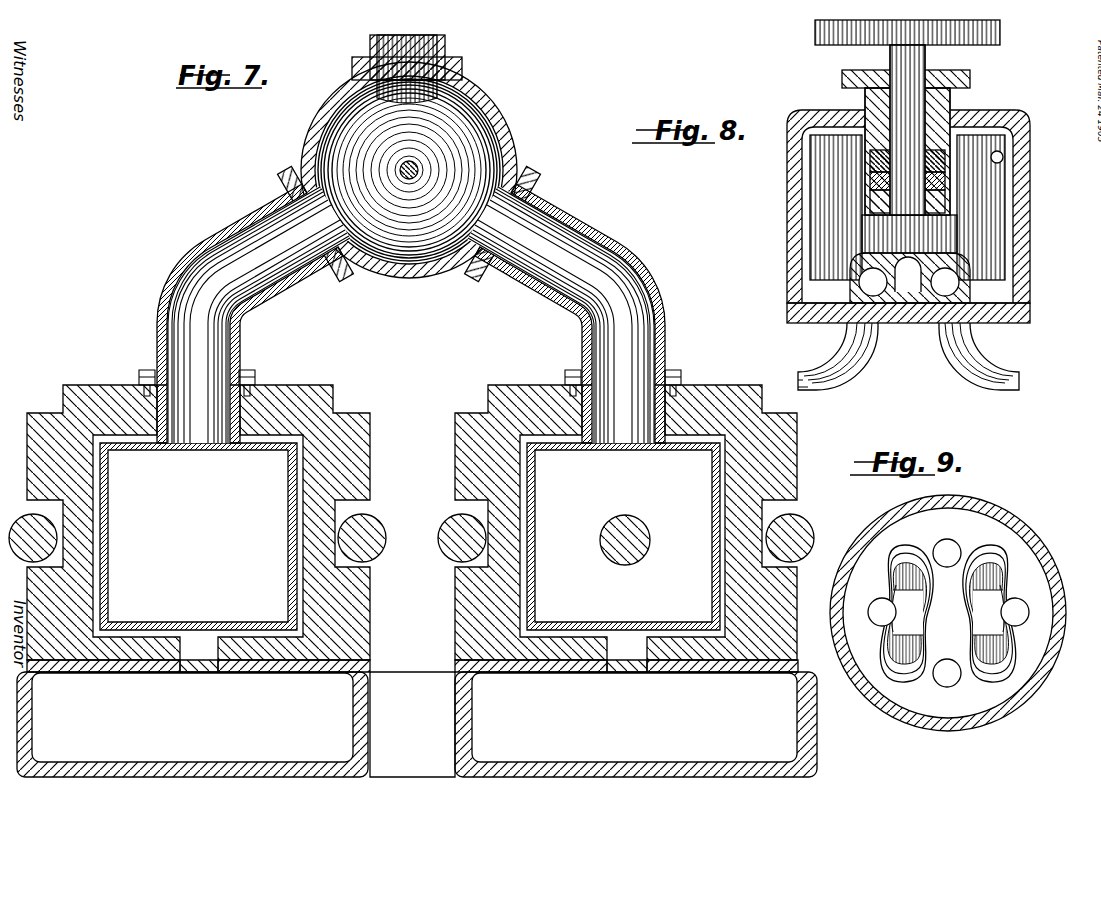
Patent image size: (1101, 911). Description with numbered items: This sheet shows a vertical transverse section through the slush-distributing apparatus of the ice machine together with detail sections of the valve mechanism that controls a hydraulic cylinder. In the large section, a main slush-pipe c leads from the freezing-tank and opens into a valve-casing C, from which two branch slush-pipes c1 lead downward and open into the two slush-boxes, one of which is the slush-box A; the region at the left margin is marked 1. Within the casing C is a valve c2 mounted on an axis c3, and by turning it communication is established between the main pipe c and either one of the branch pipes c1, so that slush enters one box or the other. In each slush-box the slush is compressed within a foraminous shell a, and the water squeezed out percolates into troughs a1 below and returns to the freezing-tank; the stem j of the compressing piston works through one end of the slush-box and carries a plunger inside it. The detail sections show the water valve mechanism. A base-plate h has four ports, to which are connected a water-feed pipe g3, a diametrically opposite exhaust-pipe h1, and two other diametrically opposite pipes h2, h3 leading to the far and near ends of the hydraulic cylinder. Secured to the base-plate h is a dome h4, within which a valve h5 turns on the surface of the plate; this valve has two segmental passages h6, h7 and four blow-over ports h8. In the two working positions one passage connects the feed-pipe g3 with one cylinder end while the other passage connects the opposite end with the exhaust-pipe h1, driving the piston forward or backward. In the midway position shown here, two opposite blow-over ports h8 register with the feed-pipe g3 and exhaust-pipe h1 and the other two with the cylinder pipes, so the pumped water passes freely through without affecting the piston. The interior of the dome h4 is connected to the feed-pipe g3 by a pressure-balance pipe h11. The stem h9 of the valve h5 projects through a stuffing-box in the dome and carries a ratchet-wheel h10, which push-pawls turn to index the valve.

In FIG. 7, the slush-box A is at (798, 445).
In FIG. 7, the engine frame 1 is at (27, 453).
In FIG. 7, the foraminous shell a is at (105, 558).
In FIG. 7, the troughs a1 is at (417, 724).
In FIG. 7, the stem of the piston j is at (636, 563).
In FIG. 7, the valve-casing C is at (515, 147).
In FIG. 7, the main slush-pipe c is at (372, 48).
In FIG. 7, the branch slush-pipes c1 is at (162, 305).
In FIG. 7, the valve c2 is at (482, 123).
In FIG. 7, the valve-axis c3 is at (400, 173).
In FIG. 8, the base-plate h is at (790, 313).
In FIG. 9, the base-plate h is at (1017, 612).
In FIG. 9, the exhaust-pipe h1 is at (948, 553).
In FIG. 9, the pipe to outer end of cylinder h2 is at (882, 612).
In FIG. 8, the pipe to inner end of cylinder h3 is at (985, 386).
In FIG. 8, the dome h4 is at (787, 205).
In FIG. 9, the dome h4 is at (888, 515).
In FIG. 8, the valve h5 is at (957, 233).
In FIG. 9, the valve h5 is at (930, 535).
In FIG. 9, the segmental passage h6 is at (888, 597).
In FIG. 9, the segmental passage h7 is at (985, 630).
In FIG. 9, the blow-over ports h8 is at (955, 548).
In FIG. 8, the stem h9 is at (898, 98).
In FIG. 8, the ratchet-wheel h10 is at (815, 35).
In FIG. 8, the pressure-balance pipe h11 is at (1000, 157).
In FIG. 8, the water-feed pipe g3 is at (800, 362).
In FIG. 9, the water-feed pipe g3 is at (948, 673).